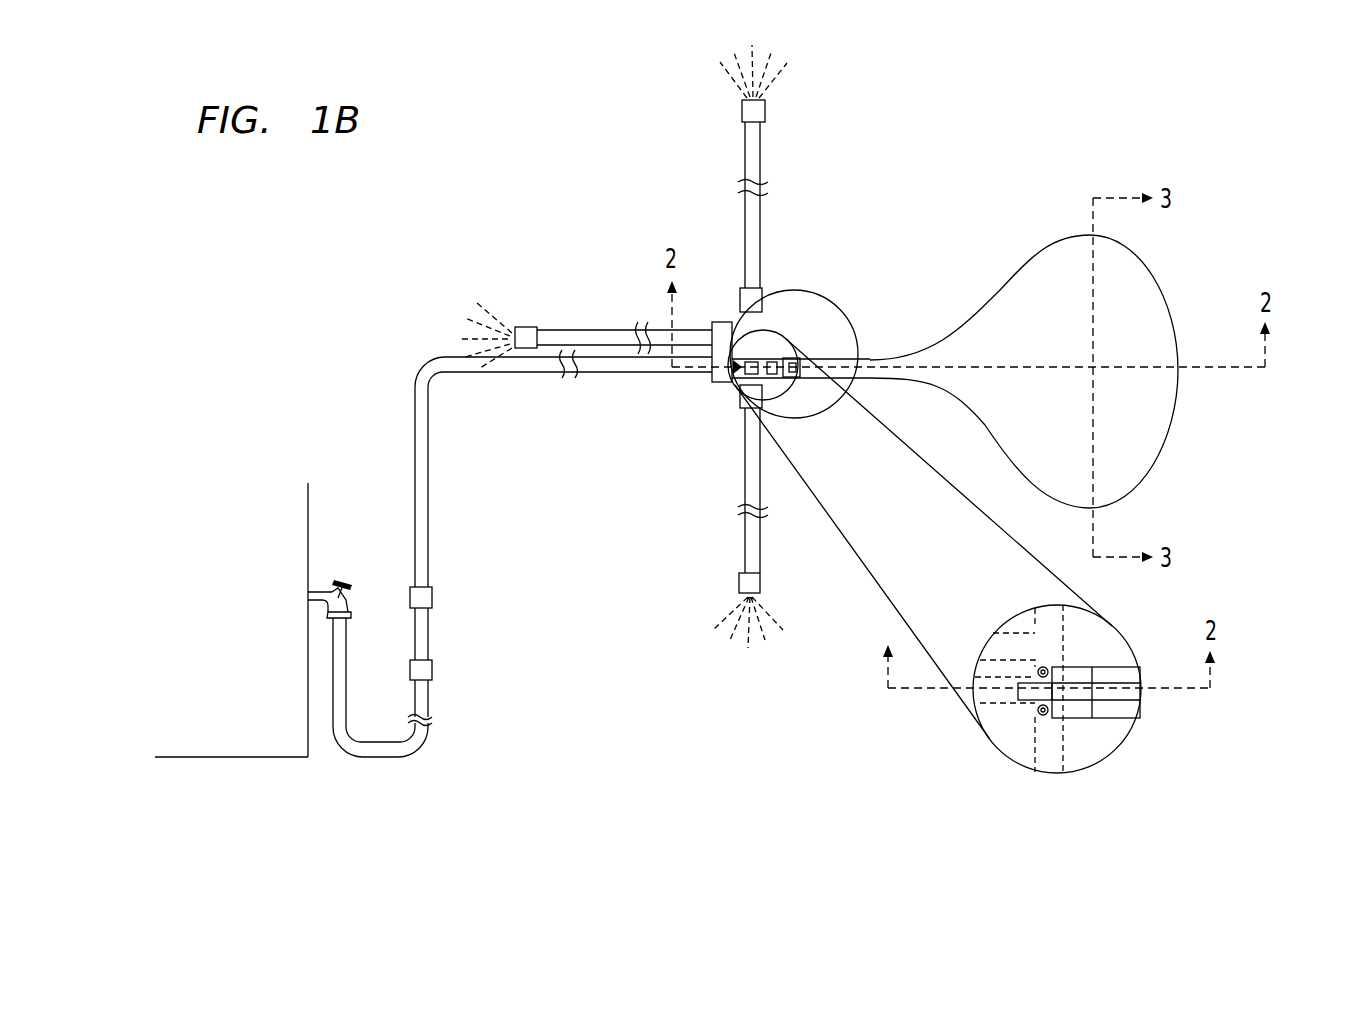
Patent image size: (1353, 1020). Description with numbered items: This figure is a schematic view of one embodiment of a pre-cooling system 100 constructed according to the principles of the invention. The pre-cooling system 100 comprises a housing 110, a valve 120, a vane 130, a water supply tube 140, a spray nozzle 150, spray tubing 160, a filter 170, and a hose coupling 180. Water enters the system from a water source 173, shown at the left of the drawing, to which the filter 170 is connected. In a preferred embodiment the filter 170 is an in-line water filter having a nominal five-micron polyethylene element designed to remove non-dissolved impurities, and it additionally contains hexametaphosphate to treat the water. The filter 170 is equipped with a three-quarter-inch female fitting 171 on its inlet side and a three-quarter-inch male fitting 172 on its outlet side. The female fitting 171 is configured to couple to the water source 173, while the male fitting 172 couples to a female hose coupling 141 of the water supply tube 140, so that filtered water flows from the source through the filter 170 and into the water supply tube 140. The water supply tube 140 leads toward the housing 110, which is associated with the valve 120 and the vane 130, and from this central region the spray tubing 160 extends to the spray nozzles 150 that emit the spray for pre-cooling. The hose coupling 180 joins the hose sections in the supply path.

The pre-cooling system 100 is at (1064, 137).
The housing 110 is at (806, 298).
The valve 120 is at (1008, 716).
The vane 130 is at (1152, 302).
The water supply tube 140 is at (615, 373).
The female hose coupling 141 is at (432, 597).
The spray nozzle 150 is at (524, 327).
The spray tubing 160 is at (590, 330).
The filter 170 is at (430, 640).
The female fitting 171 is at (410, 675).
The male fitting 172 is at (410, 607).
The water source 173 is at (351, 572).
The hose coupling 180 is at (438, 660).